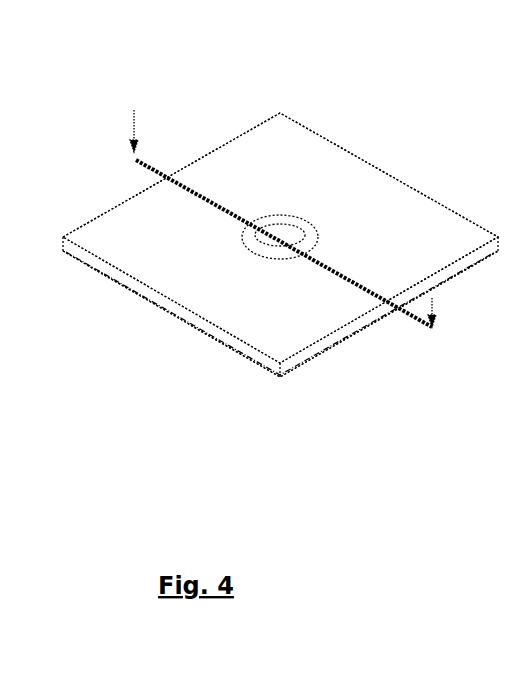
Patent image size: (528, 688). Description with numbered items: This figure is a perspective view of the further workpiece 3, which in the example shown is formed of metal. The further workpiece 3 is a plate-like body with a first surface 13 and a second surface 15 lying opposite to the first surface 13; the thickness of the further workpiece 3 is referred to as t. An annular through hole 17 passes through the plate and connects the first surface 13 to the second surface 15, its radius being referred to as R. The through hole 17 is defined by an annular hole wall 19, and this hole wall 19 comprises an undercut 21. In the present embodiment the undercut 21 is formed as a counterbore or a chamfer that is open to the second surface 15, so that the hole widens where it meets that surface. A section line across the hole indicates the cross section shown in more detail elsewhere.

The further workpiece 3 is at (142, 259).
The first surface 13 is at (342, 343).
The second surface 15 is at (378, 247).
The annular through hole 17 is at (290, 243).
The annular hole wall 19 is at (278, 237).
The undercut 21 is at (250, 248).